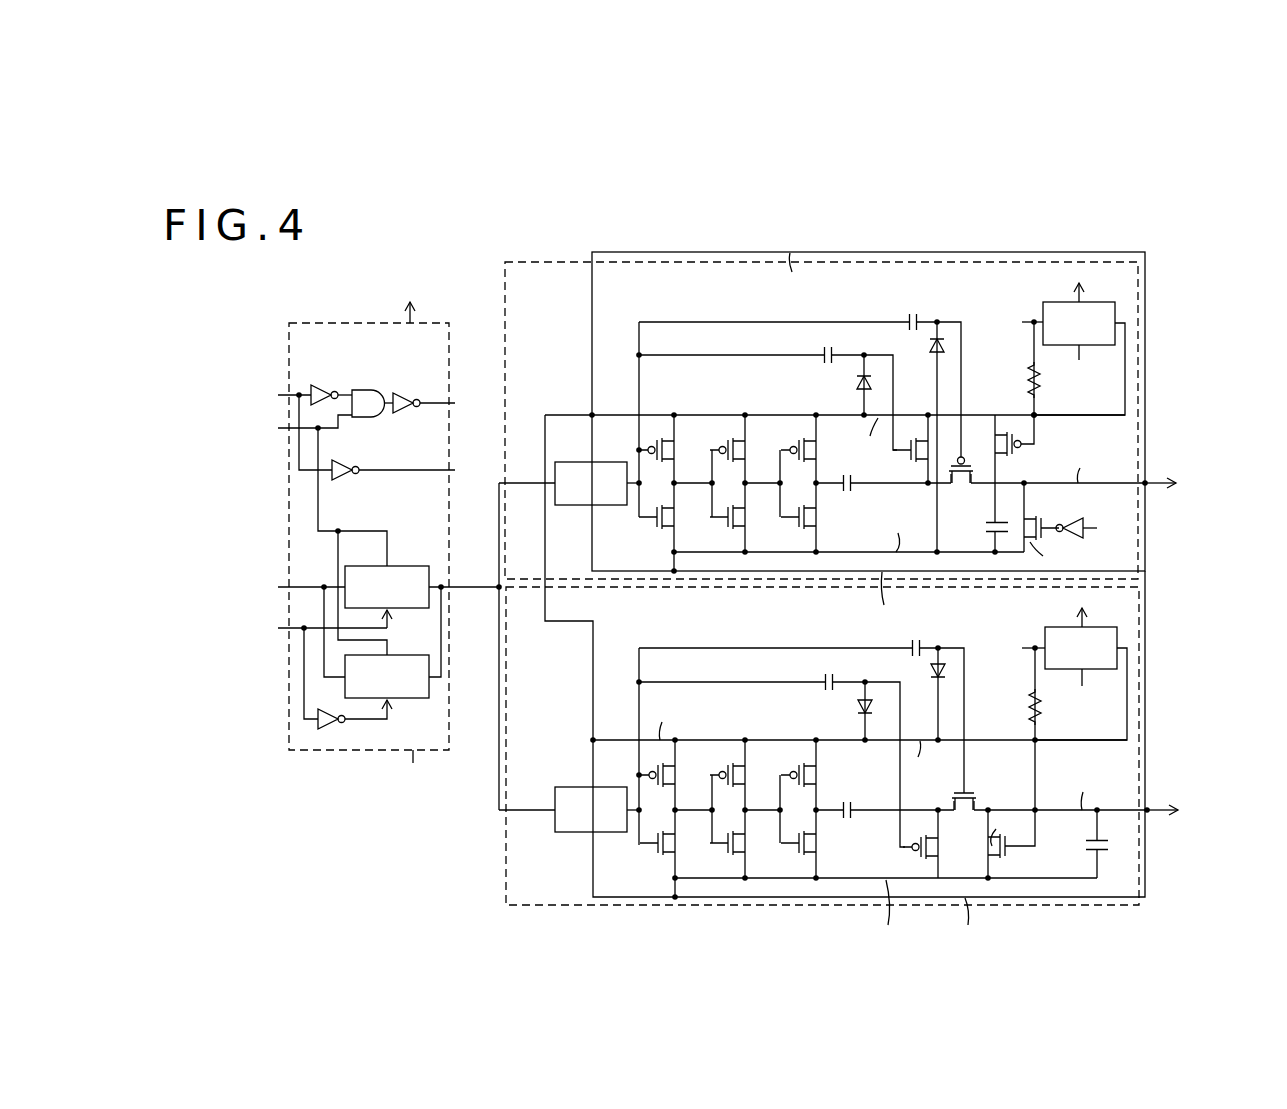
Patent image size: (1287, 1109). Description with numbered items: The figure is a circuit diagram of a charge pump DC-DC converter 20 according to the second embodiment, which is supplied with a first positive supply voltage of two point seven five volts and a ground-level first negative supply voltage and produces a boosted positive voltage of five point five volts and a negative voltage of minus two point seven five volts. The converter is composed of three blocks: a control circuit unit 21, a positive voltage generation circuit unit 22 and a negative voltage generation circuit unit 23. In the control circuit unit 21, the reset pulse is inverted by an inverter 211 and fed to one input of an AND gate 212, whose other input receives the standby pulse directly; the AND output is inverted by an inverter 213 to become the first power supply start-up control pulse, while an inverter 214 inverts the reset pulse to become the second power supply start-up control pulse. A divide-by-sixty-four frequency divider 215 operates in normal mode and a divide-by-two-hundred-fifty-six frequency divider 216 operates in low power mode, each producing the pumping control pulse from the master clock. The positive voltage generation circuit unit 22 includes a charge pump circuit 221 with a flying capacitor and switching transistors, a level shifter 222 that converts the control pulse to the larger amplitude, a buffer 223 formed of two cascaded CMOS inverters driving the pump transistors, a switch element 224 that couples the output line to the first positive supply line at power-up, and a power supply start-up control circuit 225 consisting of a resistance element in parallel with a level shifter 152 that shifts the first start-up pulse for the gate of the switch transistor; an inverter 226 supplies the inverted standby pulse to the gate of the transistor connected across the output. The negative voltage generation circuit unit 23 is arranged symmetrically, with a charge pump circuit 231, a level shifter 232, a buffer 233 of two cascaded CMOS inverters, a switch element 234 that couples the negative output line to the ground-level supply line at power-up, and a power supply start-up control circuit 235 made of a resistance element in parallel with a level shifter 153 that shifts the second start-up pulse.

The DC-DC converter 20 is at (395, 820).
The control circuit unit 21 is at (312, 320).
The 5.5 V generation circuit unit 22 is at (503, 275).
The −2.75 V generation circuit unit 23 is at (503, 864).
The inverter 211 is at (313, 383).
The AND gate 212 is at (360, 388).
The inverter 213 is at (405, 393).
The inverter 214 is at (336, 462).
The divide-by-64 frequency divider 215 is at (408, 564).
The divide-by-256 frequency divider 216 is at (408, 653).
The charge pump circuit 221 is at (791, 538).
The level shifter 222 is at (608, 461).
The buffer 223 is at (666, 540).
The switch element 224 is at (996, 410).
The power supply start-up control circuit 225 is at (1124, 292).
The inverter 226 is at (1083, 522).
The level shifter 152 is at (1043, 299).
The charge pump circuit 231 is at (791, 866).
The level shifter 232 is at (620, 772).
The buffer 233 is at (668, 864).
The switch element 234 is at (1016, 852).
The power supply start-up control circuit 235 is at (1125, 620).
The level shifter 153 is at (1043, 623).